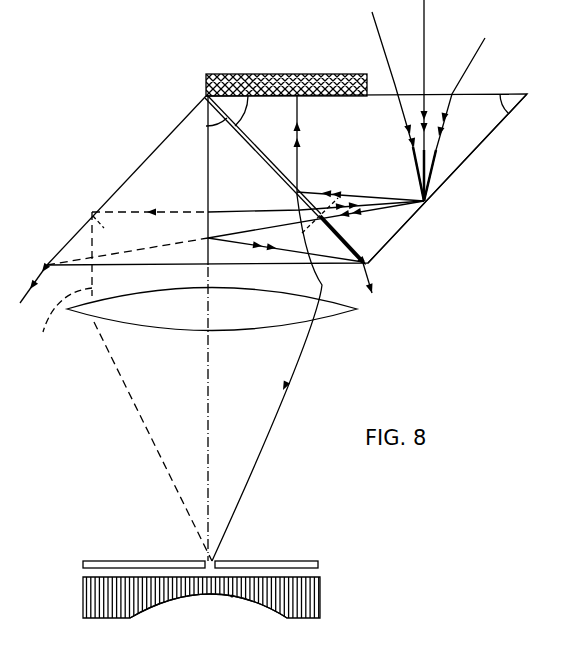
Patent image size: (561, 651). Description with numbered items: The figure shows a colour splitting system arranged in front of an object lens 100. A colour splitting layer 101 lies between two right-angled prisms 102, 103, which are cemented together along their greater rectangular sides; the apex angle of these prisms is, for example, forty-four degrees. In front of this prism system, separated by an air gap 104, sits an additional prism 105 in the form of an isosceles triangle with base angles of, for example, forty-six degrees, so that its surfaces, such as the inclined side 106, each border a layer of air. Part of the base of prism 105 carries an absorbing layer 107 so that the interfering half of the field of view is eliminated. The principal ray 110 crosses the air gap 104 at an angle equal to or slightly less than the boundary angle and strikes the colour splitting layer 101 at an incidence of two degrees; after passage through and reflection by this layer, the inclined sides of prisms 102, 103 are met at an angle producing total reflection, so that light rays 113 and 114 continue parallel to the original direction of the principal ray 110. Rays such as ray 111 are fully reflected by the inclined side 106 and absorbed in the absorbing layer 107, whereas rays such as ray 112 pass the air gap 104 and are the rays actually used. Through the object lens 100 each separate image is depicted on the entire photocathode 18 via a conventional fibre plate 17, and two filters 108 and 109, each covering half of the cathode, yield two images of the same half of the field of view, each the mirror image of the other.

The fibre plate 17 is at (321, 601).
The photocathode 18 is at (232, 596).
The object lens 100 is at (265, 322).
The colour splitting layer 101 is at (205, 152).
The right-angled prism 102 is at (147, 172).
The right-angled prism 103 is at (276, 182).
The air gap 104 is at (357, 247).
The additional prism 105 is at (397, 221).
The inclined side 106 is at (270, 166).
The absorbing layer 107 is at (290, 74).
The filter 108 is at (137, 560).
The filter 109 is at (273, 560).
The principal ray 110 is at (424, 45).
The ray 111 is at (376, 25).
The ray 112 is at (480, 50).
The light ray 113 is at (318, 279).
The light ray 114 is at (56, 304).